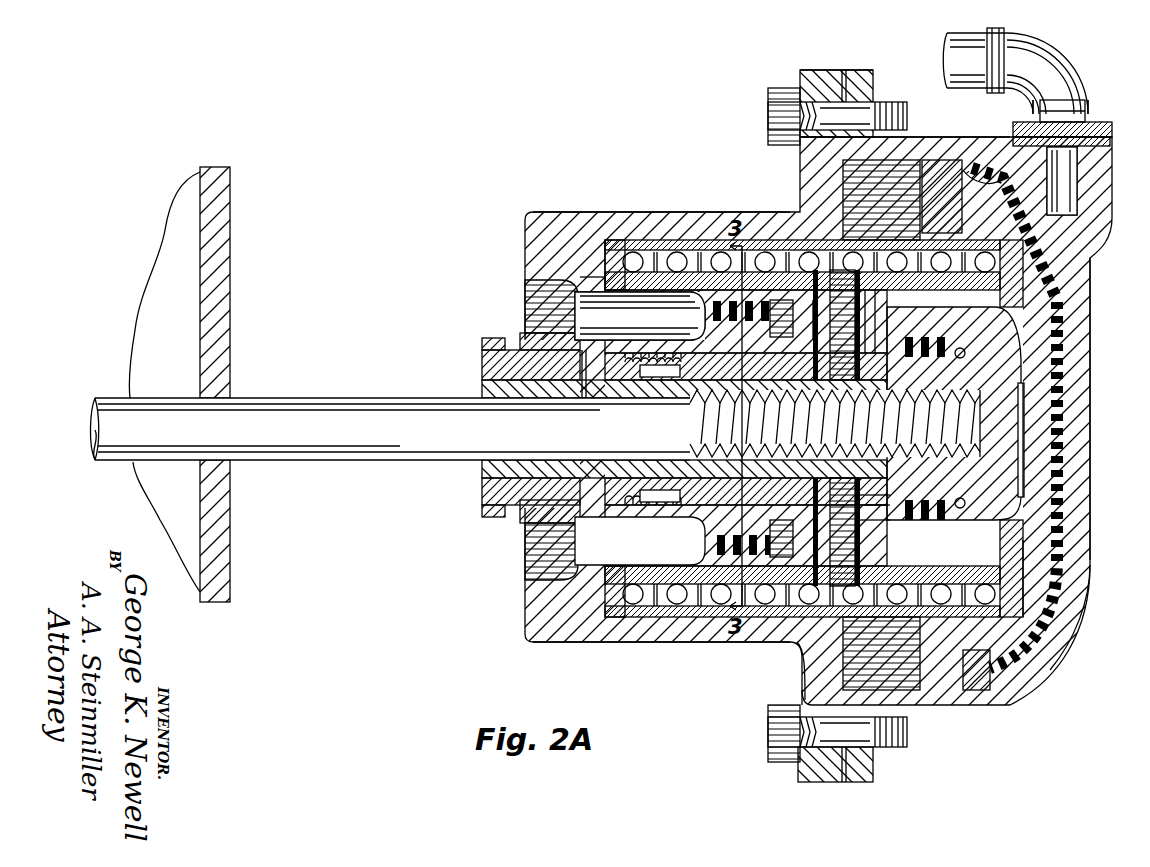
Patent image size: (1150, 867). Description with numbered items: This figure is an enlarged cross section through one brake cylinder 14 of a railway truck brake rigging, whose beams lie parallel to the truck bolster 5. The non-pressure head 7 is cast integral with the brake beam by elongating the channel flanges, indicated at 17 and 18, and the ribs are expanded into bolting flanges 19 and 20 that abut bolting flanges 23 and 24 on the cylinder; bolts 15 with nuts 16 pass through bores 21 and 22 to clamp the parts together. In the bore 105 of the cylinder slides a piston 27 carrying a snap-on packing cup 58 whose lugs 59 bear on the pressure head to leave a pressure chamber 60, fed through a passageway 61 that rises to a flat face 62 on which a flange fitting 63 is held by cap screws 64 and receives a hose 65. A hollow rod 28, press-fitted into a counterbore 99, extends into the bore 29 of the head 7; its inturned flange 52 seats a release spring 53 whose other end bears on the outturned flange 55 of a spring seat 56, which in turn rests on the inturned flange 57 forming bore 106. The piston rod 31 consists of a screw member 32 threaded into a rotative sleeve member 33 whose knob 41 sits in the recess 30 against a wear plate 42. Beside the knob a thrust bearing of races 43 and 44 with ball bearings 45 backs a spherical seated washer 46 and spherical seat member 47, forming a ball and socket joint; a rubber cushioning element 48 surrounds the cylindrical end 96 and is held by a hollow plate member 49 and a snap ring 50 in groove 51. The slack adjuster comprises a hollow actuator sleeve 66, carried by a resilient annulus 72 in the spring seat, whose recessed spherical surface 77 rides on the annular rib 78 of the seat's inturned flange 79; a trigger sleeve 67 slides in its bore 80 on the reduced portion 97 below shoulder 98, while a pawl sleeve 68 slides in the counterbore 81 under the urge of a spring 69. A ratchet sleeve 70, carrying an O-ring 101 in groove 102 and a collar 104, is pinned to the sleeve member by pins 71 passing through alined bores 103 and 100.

The truck bolster 5 is at (226, 252).
The non-pressure head 7 is at (652, 210).
The brake cylinder 14 is at (957, 137).
The bolt 15 is at (878, 120).
The nut 16 is at (782, 94).
The elongated upper flange 17 is at (612, 222).
The elongated lower flange 18 is at (652, 630).
The bolting flange 19 is at (808, 78).
The bolting flange 20 is at (802, 690).
The bore 21 is at (850, 105).
The bore 22 is at (850, 752).
The bolting flange 23 is at (866, 78).
The bolting flange 24 is at (870, 766).
The piston 27 is at (1085, 300).
The hollow rod 28 is at (958, 232).
The bore 29 is at (698, 243).
The recess 30 is at (1000, 470).
The piston rod 31 is at (394, 390).
The screw member 32 is at (414, 462).
The sleeve member 33 is at (696, 408).
The knob 41 is at (1022, 402).
The wear plate 42 is at (1030, 425).
The bearing race 43 is at (965, 356).
The bearing race 44 is at (975, 500).
The ball bearings 45 is at (965, 500).
The spherical seated washer 46 is at (975, 352).
The spherical seat member 47 is at (1040, 578).
The cushioning element 48 is at (902, 524).
The hollow plate member 49 is at (896, 508).
The snap ring 50 is at (886, 360).
The groove 51 is at (882, 345).
The inturned flange 52 is at (1005, 608).
The brake cylinder release spring 53 is at (785, 250).
The outturned flange 55 is at (600, 252).
The spring seat 56 is at (660, 272).
The inturned flange 57 is at (590, 278).
The packing cup 58 is at (1080, 550).
The lugs 59 is at (1063, 327).
The pressure chamber 60 is at (1070, 270).
The passageway 61 is at (1082, 160).
The flat face 62 is at (1112, 141).
The flange fitting 63 is at (1113, 128).
The cap screws 64 is at (1080, 115).
The hose 65 is at (950, 60).
The hollow actuator sleeve 66 is at (560, 338).
The trigger sleeve 67 is at (814, 498).
The pawl sleeve 68 is at (672, 503).
The spring 69 is at (662, 506).
The ratchet sleeve 70 is at (486, 347).
The pins 71 is at (486, 370).
The resilient annulus 72 is at (705, 292).
The recessed spherical surface 77 is at (750, 520).
The annular rib 78 is at (803, 272).
The inturned flange 79 is at (790, 530).
The bore 80 is at (745, 490).
The counterbore 81 is at (550, 500).
The cylindrical end 96 is at (898, 490).
The reduced portion 97 is at (852, 347).
The shoulder 98 is at (852, 325).
The counterbore 99 is at (975, 232).
The bores 100 is at (584, 400).
The O-ring 101 is at (605, 348).
The groove 102 is at (608, 502).
The bores 103 is at (550, 334).
The collar 104 is at (486, 510).
The bore 105 is at (910, 165).
The bore 106 is at (540, 284).